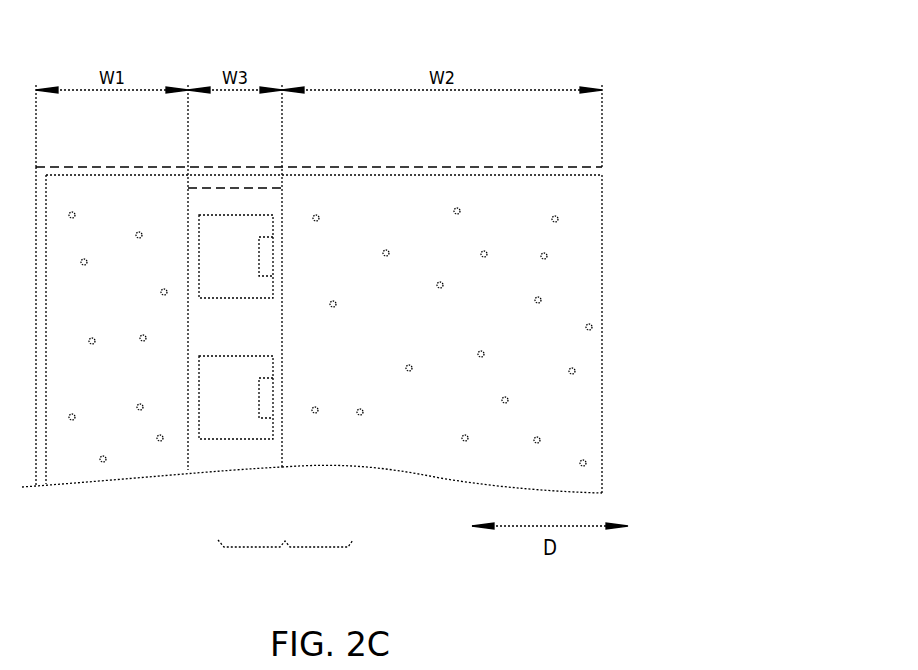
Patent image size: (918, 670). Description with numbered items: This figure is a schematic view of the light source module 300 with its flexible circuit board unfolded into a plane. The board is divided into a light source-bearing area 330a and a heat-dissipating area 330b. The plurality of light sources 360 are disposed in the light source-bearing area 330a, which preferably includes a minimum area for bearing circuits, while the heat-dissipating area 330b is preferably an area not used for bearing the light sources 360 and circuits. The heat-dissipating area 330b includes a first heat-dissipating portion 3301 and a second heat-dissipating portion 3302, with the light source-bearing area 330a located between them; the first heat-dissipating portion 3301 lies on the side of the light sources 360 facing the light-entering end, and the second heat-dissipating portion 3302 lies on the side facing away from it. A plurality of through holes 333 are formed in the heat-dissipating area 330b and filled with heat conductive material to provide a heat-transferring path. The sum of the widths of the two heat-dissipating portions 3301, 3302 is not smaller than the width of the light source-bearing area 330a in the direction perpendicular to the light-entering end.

The light source module 300 is at (69, 26).
The light source-bearing area 330a is at (263, 200).
The heat-dissipating area 330b is at (285, 560).
The first heat-dissipating portion 3301 is at (155, 460).
The second heat-dissipating portion 3302 is at (396, 462).
The through holes 333 is at (577, 372).
The light sources 360 is at (227, 233).